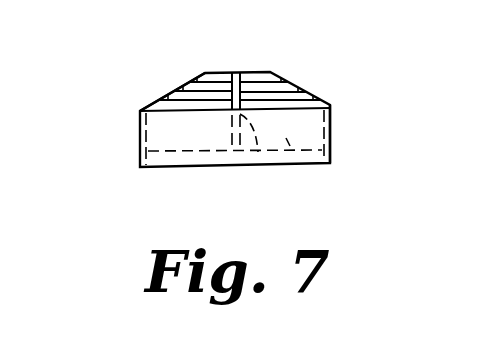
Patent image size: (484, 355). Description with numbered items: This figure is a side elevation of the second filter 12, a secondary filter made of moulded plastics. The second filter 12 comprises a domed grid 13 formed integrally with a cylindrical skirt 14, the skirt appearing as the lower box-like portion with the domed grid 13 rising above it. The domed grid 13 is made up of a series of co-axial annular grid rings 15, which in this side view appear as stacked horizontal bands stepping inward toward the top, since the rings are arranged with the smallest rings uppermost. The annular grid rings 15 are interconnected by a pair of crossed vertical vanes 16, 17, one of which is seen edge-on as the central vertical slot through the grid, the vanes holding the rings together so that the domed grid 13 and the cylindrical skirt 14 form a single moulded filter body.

The second filter 12 is at (134, 137).
The domed grid 13 is at (172, 83).
The cylindrical skirt 14 is at (331, 135).
The annular grid rings 15 is at (274, 77).
The vertical vane 16 is at (290, 146).
The vertical vane 17 is at (258, 154).